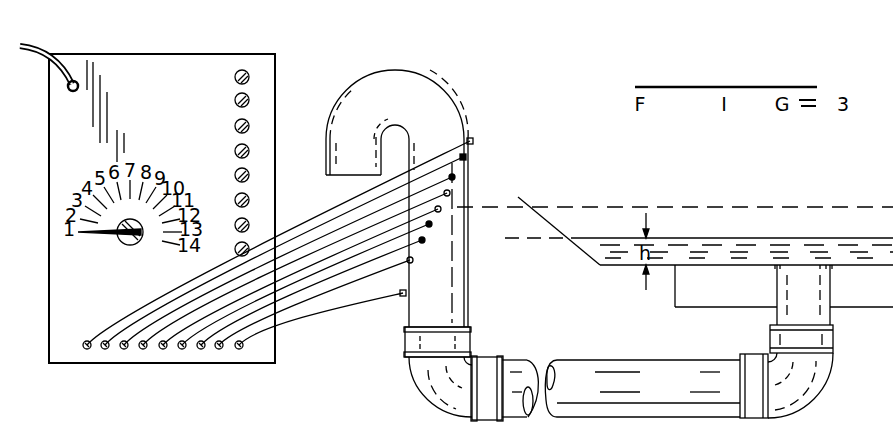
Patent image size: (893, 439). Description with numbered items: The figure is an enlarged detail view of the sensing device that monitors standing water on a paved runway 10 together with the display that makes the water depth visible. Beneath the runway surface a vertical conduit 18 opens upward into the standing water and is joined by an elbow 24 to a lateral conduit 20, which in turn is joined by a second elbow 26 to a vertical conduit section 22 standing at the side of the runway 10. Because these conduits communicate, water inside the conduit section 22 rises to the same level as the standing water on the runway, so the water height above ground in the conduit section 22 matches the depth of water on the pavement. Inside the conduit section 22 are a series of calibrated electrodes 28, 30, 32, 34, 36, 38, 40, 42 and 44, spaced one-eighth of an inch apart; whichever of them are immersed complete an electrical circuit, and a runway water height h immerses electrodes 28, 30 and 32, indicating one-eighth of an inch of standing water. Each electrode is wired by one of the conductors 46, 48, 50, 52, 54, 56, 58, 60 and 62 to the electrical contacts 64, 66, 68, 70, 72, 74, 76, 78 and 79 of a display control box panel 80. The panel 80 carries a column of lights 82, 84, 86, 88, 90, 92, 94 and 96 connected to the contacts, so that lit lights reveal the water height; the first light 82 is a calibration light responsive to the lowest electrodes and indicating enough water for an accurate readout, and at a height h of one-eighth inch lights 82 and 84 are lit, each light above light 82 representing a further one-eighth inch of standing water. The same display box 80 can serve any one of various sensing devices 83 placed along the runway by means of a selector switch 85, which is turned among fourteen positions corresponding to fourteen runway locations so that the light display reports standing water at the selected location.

The paved runway 10 is at (735, 265).
The vertical conduit 18 is at (829, 293).
The lateral conduit 20 is at (657, 365).
The vertical conduit section 22 is at (469, 310).
The elbow 24 is at (808, 386).
The elbow 26 is at (431, 401).
The electrode 28 is at (407, 293).
The electrode 30 is at (413, 260).
The electrode 32 is at (425, 240).
The electrode 34 is at (432, 223).
The electrode 36 is at (441, 208).
The electrode 38 is at (450, 192).
The electrode 40 is at (455, 176).
The electrode 42 is at (466, 156).
The electrode 44 is at (472, 139).
The conductor 46 is at (369, 299).
The conductor 48 is at (362, 284).
The conductor 50 is at (345, 279).
The conductor 52 is at (332, 271).
The conductor 54 is at (317, 266).
The conductor 56 is at (335, 245).
The conductor 58 is at (319, 242).
The conductor 60 is at (298, 242).
The conductor 62 is at (335, 208).
The electrical contact 64 is at (241, 348).
The electrical contact 66 is at (221, 348).
The electrical contact 68 is at (202, 348).
The electrical contact 70 is at (183, 348).
The electrical contact 72 is at (164, 348).
The electrical contact 74 is at (142, 348).
The electrical contact 76 is at (122, 348).
The electrical contact 78 is at (103, 348).
The electrical contact 79 is at (84, 348).
The display control box panel 80 is at (168, 75).
The calibration light 82 is at (235, 249).
The sensing device 83 is at (533, 350).
The light 84 is at (235, 225).
The selector switch 85 is at (126, 244).
The light 86 is at (235, 201).
The light 88 is at (235, 175).
The light 90 is at (235, 151).
The light 92 is at (235, 126).
The light 94 is at (235, 98).
The light 96 is at (239, 70).